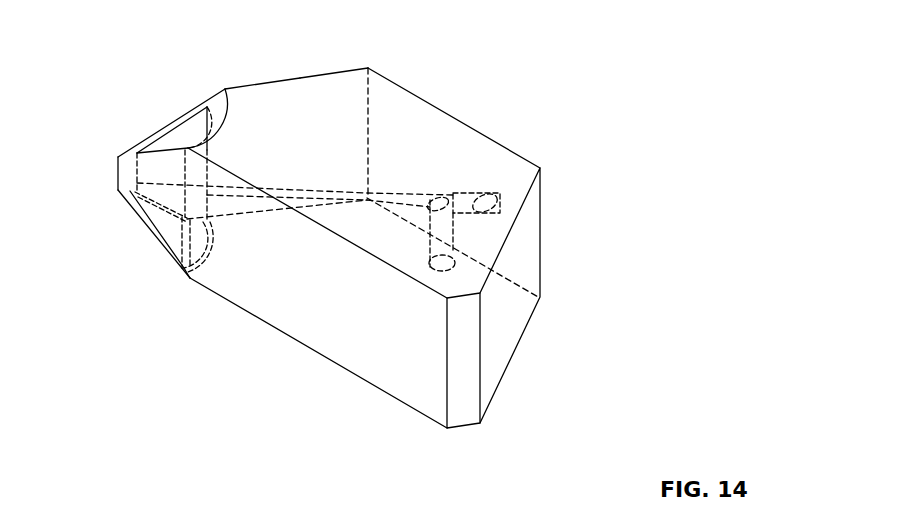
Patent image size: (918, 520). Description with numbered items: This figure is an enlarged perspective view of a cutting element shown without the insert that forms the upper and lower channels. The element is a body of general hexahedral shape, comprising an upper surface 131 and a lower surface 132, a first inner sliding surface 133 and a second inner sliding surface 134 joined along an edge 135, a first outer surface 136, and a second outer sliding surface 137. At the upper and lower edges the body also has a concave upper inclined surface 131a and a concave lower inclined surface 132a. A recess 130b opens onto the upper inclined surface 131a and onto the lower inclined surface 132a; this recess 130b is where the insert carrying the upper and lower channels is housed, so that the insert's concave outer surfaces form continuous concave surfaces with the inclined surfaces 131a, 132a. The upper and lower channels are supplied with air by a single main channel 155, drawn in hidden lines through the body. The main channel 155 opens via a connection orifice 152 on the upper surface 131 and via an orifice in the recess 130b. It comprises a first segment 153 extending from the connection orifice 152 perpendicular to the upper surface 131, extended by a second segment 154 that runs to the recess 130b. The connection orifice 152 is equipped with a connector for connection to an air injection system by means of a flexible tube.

The upper surface 131 is at (323, 357).
The concave upper inclined surface 131a is at (155, 240).
The lower surface 132 is at (326, 88).
The concave lower inclined surface 132a is at (143, 134).
The first inner sliding surface 133 is at (270, 303).
The second inner sliding surface 134 is at (275, 82).
The edge 135 is at (117, 163).
The first outer surface 136 is at (486, 139).
The second outer sliding surface 137 is at (507, 345).
The recess 130b is at (180, 130).
The connection orifice 152 is at (455, 268).
The first segment 153 is at (453, 239).
The second segment 154 is at (405, 190).
The main channel 155 is at (343, 190).